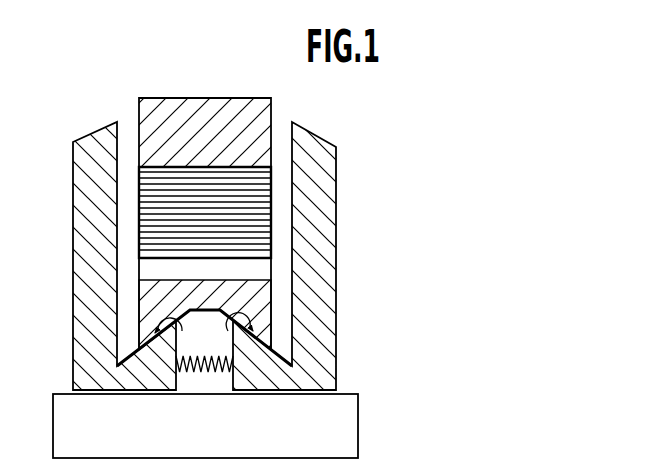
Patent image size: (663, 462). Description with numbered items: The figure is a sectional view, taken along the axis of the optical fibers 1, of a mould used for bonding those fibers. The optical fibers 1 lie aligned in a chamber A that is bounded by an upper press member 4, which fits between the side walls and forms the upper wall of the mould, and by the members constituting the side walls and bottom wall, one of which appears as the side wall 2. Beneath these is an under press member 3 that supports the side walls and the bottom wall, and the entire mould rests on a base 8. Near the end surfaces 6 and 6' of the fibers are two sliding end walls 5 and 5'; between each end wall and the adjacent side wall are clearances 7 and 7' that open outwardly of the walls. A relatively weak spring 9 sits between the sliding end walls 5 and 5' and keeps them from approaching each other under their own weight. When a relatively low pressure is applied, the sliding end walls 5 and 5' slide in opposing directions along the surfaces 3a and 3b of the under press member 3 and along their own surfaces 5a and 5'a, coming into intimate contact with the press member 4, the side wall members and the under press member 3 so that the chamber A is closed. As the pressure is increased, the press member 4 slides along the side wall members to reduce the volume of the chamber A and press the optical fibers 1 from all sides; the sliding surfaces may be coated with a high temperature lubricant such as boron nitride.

The optical fibers 1 is at (270, 233).
The side wall and bottom wall component 2 is at (270, 285).
The under press member 3 is at (264, 321).
The sliding surface 3a is at (181, 329).
The sliding surface 3b is at (232, 327).
The upper press member 4 is at (242, 108).
The sliding end wall 5 is at (303, 256).
The sliding end wall 5' is at (108, 256).
The sliding surface 5a is at (308, 397).
The sliding surface 5'a is at (124, 386).
The end surface of optical fibers 6 is at (105, 212).
The end surface of optical fibers 6' is at (303, 212).
The clearance 7 is at (93, 250).
The clearance 7' is at (318, 250).
The base 8 is at (340, 414).
The spring 9 is at (213, 378).
The chamber A is at (166, 178).